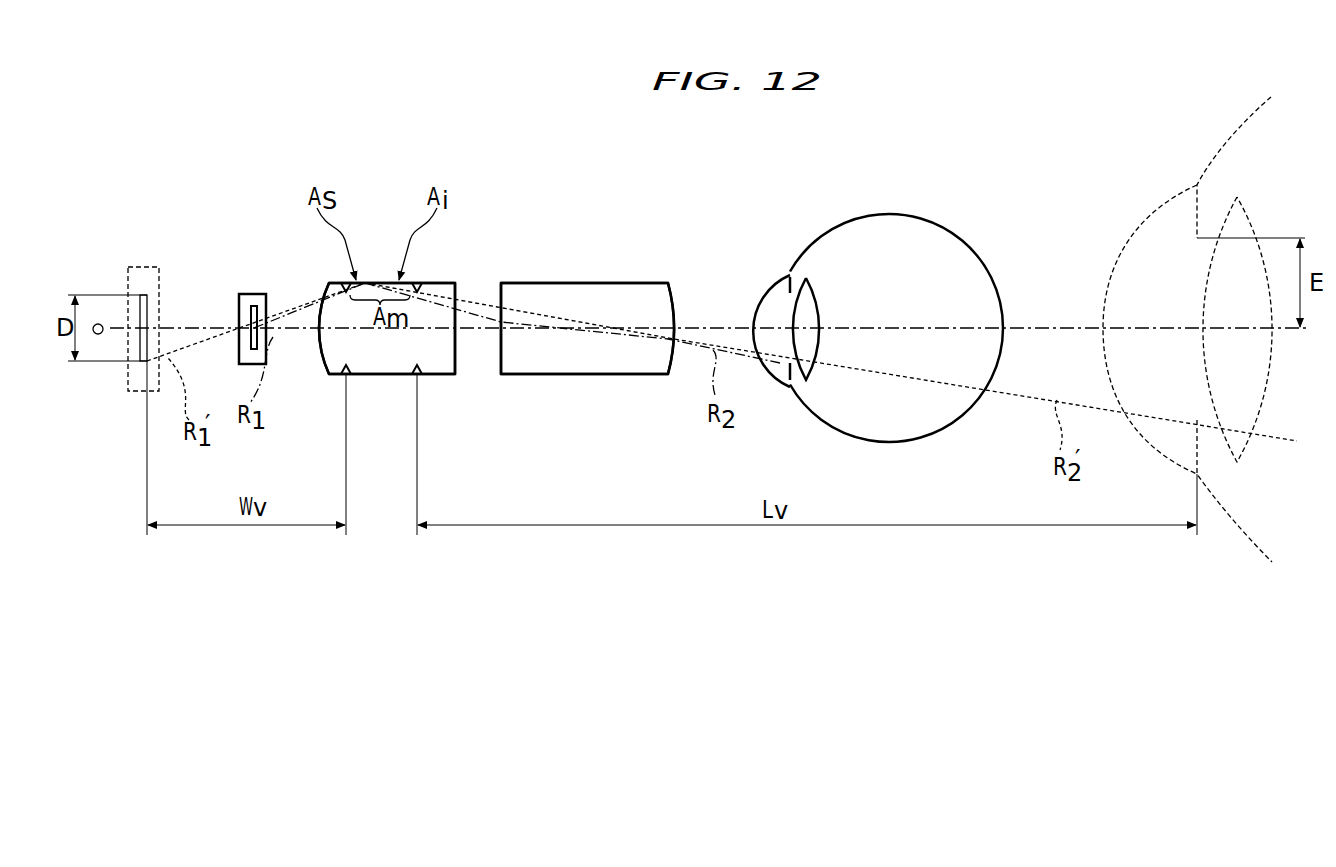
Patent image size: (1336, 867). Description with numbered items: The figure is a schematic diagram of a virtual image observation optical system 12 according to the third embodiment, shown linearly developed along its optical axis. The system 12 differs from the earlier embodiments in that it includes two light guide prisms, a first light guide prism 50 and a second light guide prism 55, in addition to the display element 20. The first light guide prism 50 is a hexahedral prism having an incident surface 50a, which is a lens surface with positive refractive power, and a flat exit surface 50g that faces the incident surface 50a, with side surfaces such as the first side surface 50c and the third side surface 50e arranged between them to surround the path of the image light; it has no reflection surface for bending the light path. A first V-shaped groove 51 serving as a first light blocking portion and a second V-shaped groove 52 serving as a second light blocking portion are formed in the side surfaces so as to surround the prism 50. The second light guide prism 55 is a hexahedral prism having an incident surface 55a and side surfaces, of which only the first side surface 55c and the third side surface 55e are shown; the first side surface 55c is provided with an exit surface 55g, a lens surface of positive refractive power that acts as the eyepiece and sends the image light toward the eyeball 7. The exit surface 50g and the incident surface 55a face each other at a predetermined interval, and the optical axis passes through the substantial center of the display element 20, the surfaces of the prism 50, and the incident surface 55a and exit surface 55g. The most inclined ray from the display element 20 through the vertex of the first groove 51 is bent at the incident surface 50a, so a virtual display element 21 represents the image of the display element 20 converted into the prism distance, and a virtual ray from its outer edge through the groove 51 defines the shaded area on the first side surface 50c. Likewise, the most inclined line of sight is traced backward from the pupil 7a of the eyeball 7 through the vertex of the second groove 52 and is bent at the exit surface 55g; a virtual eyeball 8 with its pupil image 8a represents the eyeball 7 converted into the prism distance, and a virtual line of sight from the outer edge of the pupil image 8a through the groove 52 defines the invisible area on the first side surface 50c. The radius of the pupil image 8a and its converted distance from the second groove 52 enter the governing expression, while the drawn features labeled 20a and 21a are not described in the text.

The eyeball 7 is at (950, 250).
The pupil 7a is at (777, 293).
The virtual eyeball 8 is at (1257, 120).
The pupil image 8a is at (1170, 215).
The virtual image observation optical system 12 is at (537, 478).
The display element 20 is at (239, 300).
The display surface 20a is at (250, 348).
The virtual display element 21 is at (128, 274).
The light emitting surface 21a is at (140, 348).
The first light guide prism 50 is at (447, 288).
The incident surface 50a is at (323, 350).
The first side surface 50c is at (383, 283).
The third surface of prism 50e is at (378, 376).
The exit surface 50g is at (456, 374).
The first V-shaped groove 51 is at (342, 288).
The second V-shaped groove 52 is at (420, 288).
The second light guide prism 55 is at (620, 300).
The incident surface 55a is at (501, 290).
The first side surface 55c is at (566, 284).
The third side surface 55e is at (588, 376).
The exit surface 55g is at (675, 305).